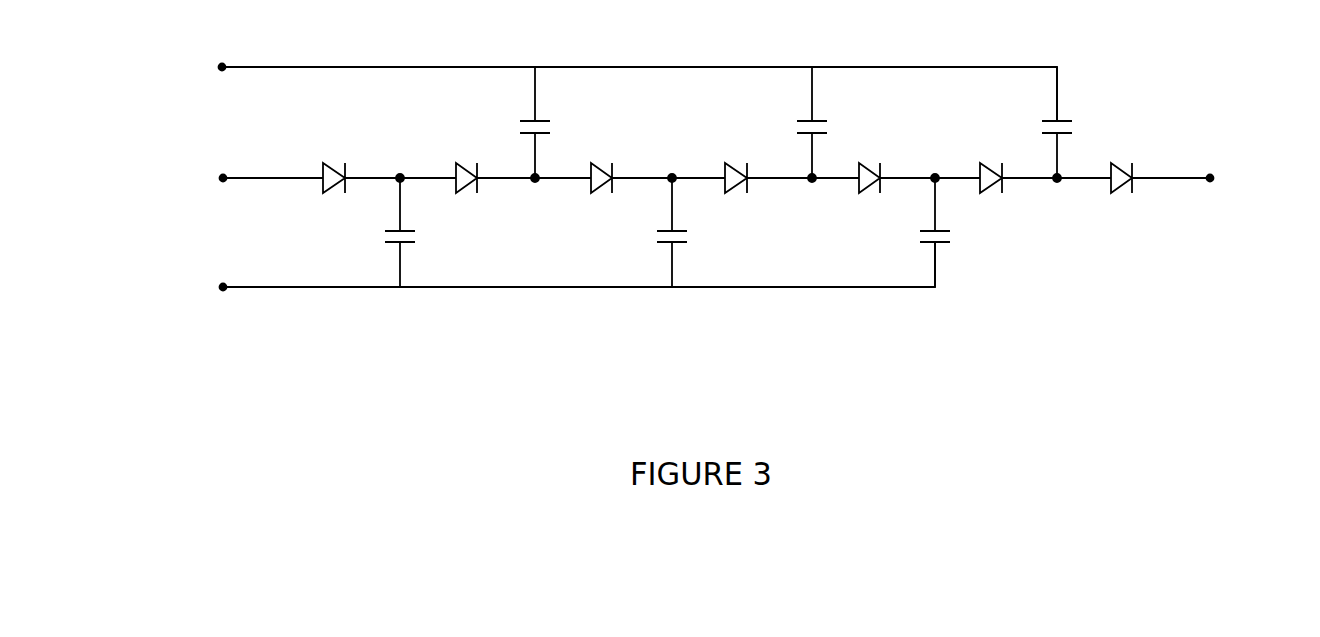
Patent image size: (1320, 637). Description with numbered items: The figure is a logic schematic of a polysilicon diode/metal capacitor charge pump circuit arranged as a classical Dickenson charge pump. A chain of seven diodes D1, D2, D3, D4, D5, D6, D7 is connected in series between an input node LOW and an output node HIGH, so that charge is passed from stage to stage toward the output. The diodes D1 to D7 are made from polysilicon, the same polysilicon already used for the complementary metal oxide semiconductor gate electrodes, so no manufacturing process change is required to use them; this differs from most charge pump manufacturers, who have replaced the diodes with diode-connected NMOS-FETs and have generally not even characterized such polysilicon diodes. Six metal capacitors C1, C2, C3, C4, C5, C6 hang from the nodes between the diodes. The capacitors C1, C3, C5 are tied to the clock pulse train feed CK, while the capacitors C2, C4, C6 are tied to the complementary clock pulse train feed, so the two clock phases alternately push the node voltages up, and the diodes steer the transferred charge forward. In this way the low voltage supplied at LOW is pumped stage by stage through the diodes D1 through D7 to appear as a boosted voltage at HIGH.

The diode D1 is at (331, 160).
The diode D2 is at (460, 159).
The diode D3 is at (600, 159).
The diode D4 is at (727, 160).
The diode D5 is at (872, 160).
The diode D6 is at (997, 160).
The diode D7 is at (1131, 160).
The capacitor C1 is at (421, 232).
The capacitor C2 is at (558, 122).
The capacitor C3 is at (693, 232).
The capacitor C4 is at (832, 122).
The capacitor C5 is at (955, 232).
The capacitor C6 is at (1075, 122).
The clock pulse train feed CK is at (537, 273).
The low voltage input LOW is at (219, 180).
The high voltage output HIGH is at (1214, 175).